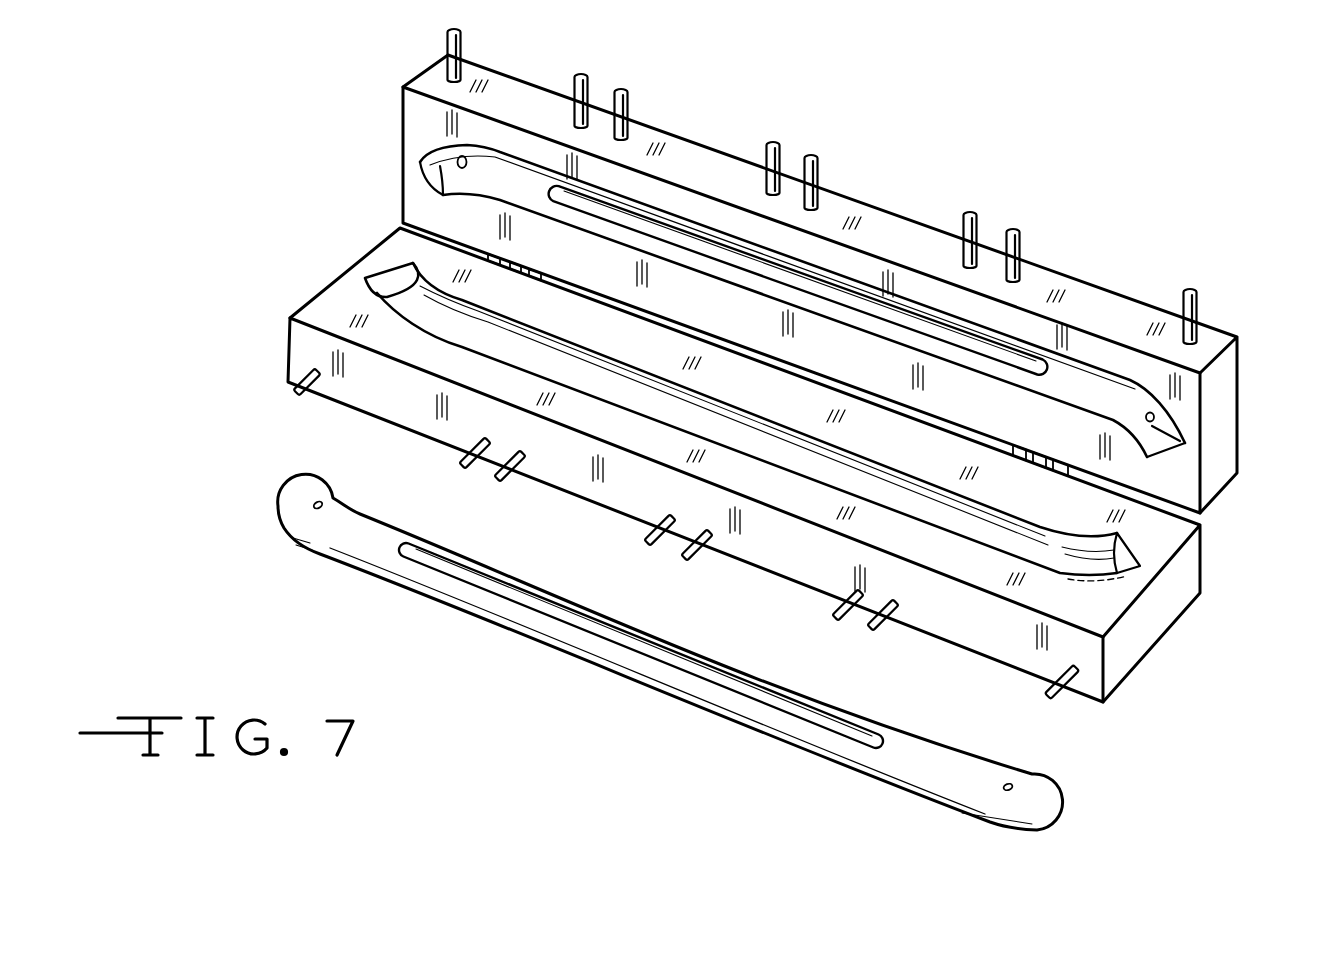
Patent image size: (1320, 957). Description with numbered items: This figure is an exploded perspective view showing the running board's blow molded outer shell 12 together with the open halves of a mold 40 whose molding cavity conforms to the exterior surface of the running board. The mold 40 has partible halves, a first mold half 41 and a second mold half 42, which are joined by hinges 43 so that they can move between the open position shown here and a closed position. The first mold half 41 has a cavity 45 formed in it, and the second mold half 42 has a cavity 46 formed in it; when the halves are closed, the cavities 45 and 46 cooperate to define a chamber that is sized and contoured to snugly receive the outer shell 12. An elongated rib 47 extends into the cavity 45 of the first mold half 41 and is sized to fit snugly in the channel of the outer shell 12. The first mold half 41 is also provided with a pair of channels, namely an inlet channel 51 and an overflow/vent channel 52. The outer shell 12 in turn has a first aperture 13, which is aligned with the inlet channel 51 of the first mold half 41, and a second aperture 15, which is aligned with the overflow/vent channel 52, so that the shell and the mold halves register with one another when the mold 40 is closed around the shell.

The outer shell 12 is at (903, 767).
The first aperture 13 is at (315, 508).
The second aperture 15 is at (1030, 783).
The mold 40 is at (1098, 274).
The first mold half 41 is at (1222, 420).
The second mold half 42 is at (1163, 608).
The hinges 43 is at (529, 281).
The cavity 45 is at (521, 182).
The cavity 46 is at (473, 337).
The elongated rib 47 is at (686, 240).
The inlet channel 51 is at (423, 161).
The overflow/vent channel 52 is at (1188, 444).